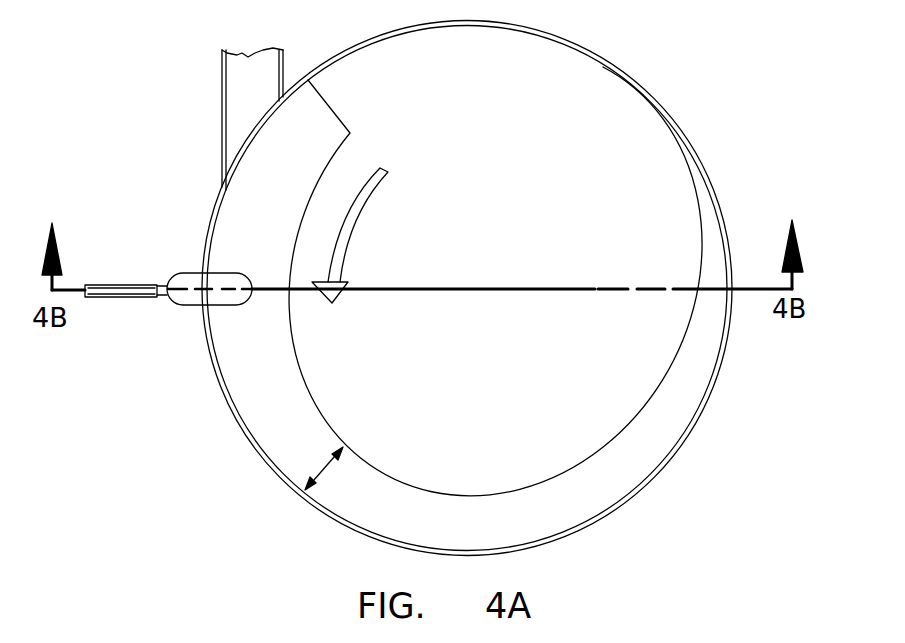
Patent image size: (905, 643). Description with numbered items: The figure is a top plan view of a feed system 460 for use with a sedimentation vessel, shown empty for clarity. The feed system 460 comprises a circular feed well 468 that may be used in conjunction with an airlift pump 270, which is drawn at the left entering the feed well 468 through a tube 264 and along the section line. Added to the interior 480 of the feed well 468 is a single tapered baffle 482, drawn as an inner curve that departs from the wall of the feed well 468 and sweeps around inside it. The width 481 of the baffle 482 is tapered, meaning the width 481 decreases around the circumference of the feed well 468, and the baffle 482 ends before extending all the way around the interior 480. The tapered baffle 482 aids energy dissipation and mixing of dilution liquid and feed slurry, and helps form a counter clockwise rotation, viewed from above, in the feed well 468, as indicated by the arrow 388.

The tube 264 is at (252, 72).
The airlift pump 270 is at (200, 283).
The arrow 388 is at (338, 238).
The feed system 460 is at (698, 423).
The feed well 468 is at (528, 288).
The interior 480 is at (440, 28).
The width 481 is at (313, 466).
The tapered baffle 482 is at (278, 398).